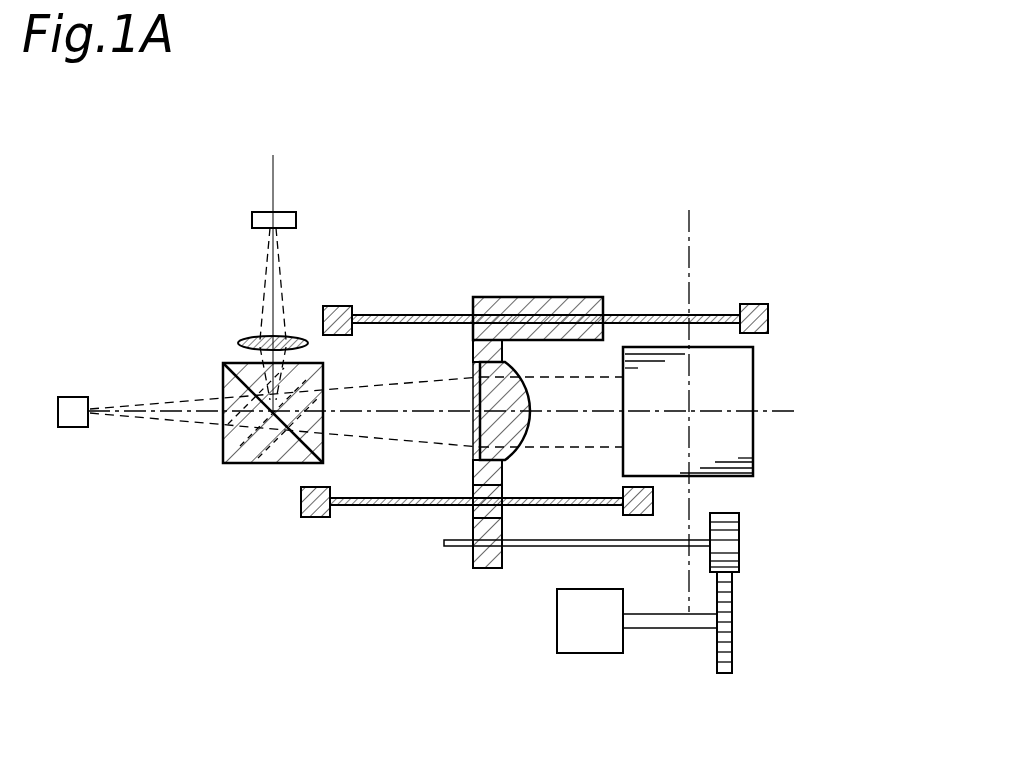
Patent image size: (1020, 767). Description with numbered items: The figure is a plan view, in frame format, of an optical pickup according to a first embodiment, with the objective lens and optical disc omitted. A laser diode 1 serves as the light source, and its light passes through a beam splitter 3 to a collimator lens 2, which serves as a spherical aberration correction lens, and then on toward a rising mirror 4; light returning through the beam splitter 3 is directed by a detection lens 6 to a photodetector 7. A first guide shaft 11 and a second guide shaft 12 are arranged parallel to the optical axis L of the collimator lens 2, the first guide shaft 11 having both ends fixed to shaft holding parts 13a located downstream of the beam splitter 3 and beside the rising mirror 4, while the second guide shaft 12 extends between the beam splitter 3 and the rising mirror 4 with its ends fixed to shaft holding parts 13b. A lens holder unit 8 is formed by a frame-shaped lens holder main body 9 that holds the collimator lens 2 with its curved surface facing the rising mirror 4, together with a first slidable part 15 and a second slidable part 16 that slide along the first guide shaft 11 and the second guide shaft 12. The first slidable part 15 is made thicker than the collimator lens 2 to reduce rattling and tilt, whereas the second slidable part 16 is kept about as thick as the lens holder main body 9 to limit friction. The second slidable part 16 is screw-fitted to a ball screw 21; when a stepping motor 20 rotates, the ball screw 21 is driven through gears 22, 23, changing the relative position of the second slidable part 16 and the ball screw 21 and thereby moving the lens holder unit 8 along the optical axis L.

The laser diode 1 is at (73, 397).
The collimator lens 2 is at (478, 491).
The beam splitter 3 is at (245, 463).
The rising mirror 4 is at (755, 432).
The detection lens 6 is at (250, 338).
The photodetector 7 is at (252, 219).
The lens holder unit 8 is at (478, 503).
The lens holder main body 9 is at (495, 348).
The first guide shaft 11 is at (655, 314).
The second guide shaft 12 is at (550, 507).
The shaft holding parts 13a is at (340, 305).
The shaft holding parts 13b is at (312, 518).
The first slidable part 15 is at (518, 296).
The second slidable part 16 is at (490, 520).
The stepping motor 20 is at (586, 630).
The ball screw 21 is at (675, 540).
The gear 22 is at (734, 619).
The gear 23 is at (740, 545).
The optical axis L is at (378, 410).